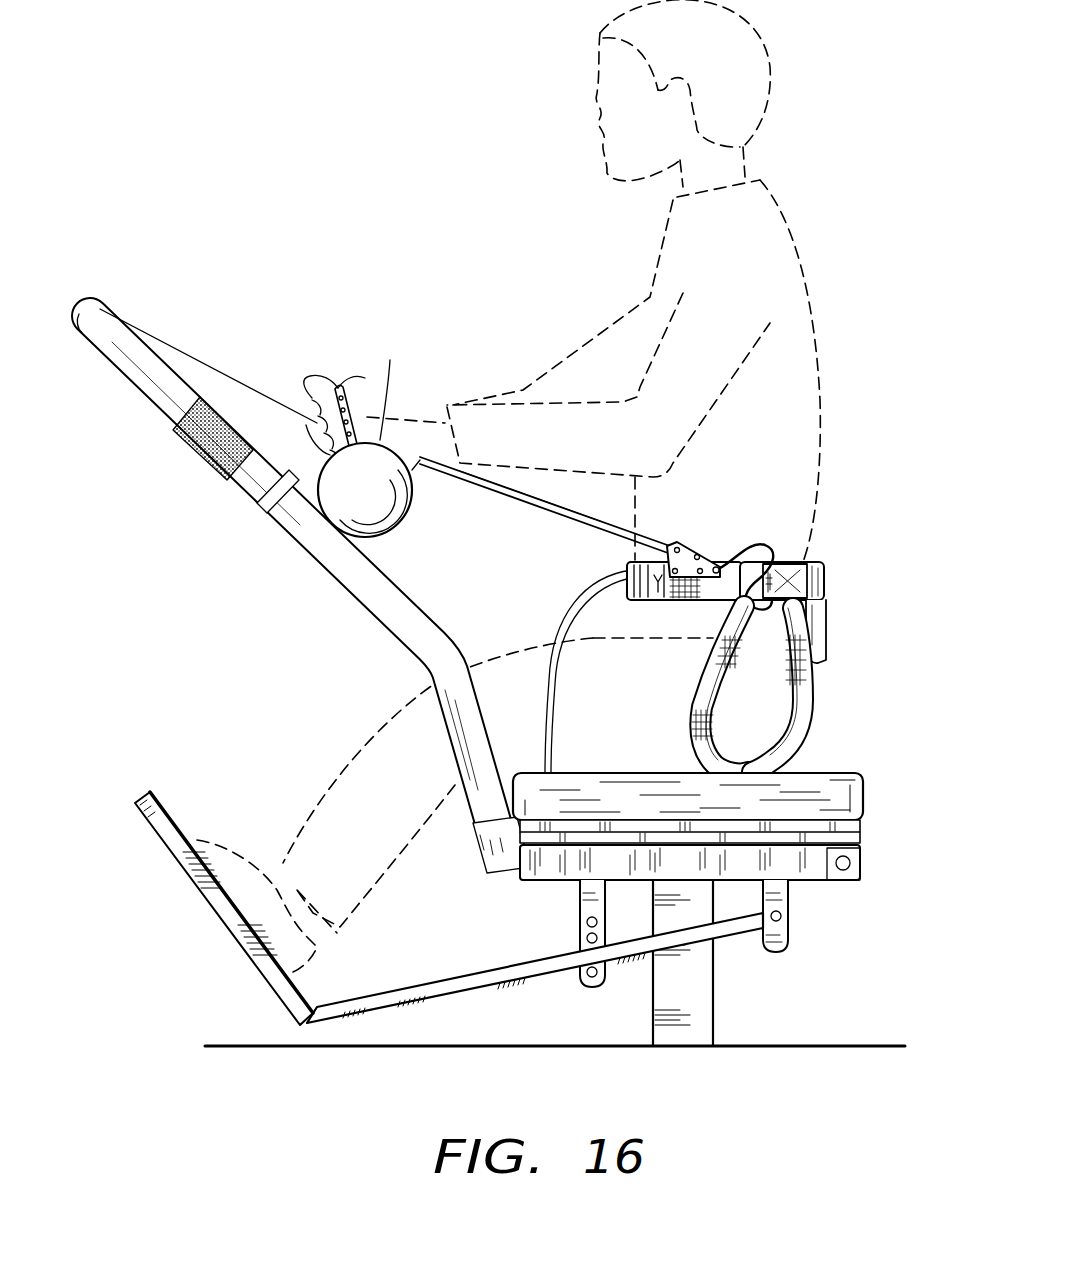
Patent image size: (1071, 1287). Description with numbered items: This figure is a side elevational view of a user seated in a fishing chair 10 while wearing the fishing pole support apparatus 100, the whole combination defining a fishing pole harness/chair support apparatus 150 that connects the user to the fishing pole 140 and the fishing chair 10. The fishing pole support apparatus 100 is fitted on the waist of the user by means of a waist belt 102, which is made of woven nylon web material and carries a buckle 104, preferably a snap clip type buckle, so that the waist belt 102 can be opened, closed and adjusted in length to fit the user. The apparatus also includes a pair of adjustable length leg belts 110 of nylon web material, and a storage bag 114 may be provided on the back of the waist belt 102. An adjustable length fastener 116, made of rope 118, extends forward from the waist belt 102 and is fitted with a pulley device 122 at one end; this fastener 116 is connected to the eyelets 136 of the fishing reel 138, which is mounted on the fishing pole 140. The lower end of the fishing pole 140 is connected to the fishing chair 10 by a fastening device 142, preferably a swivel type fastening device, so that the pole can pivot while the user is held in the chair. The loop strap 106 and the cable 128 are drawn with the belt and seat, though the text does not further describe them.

The fishing chair 10 is at (880, 818).
The fishing pole support apparatus 100 is at (722, 618).
The waist belt 102 is at (795, 562).
The buckle 104 is at (632, 565).
The strap loop 106 is at (698, 652).
The leg belts 110 is at (772, 689).
The storage bag 114 is at (817, 630).
The adjustable length fastener 116 is at (538, 510).
The rope 118 is at (495, 478).
The pulley device 122 is at (695, 546).
The cable 128 is at (537, 718).
The eyelets 136 is at (372, 438).
The fishing reel 138 is at (337, 503).
The fishing pole 140 is at (143, 402).
The fastening device 142 is at (475, 862).
The fishing pole harness/chair support apparatus 150 is at (258, 652).